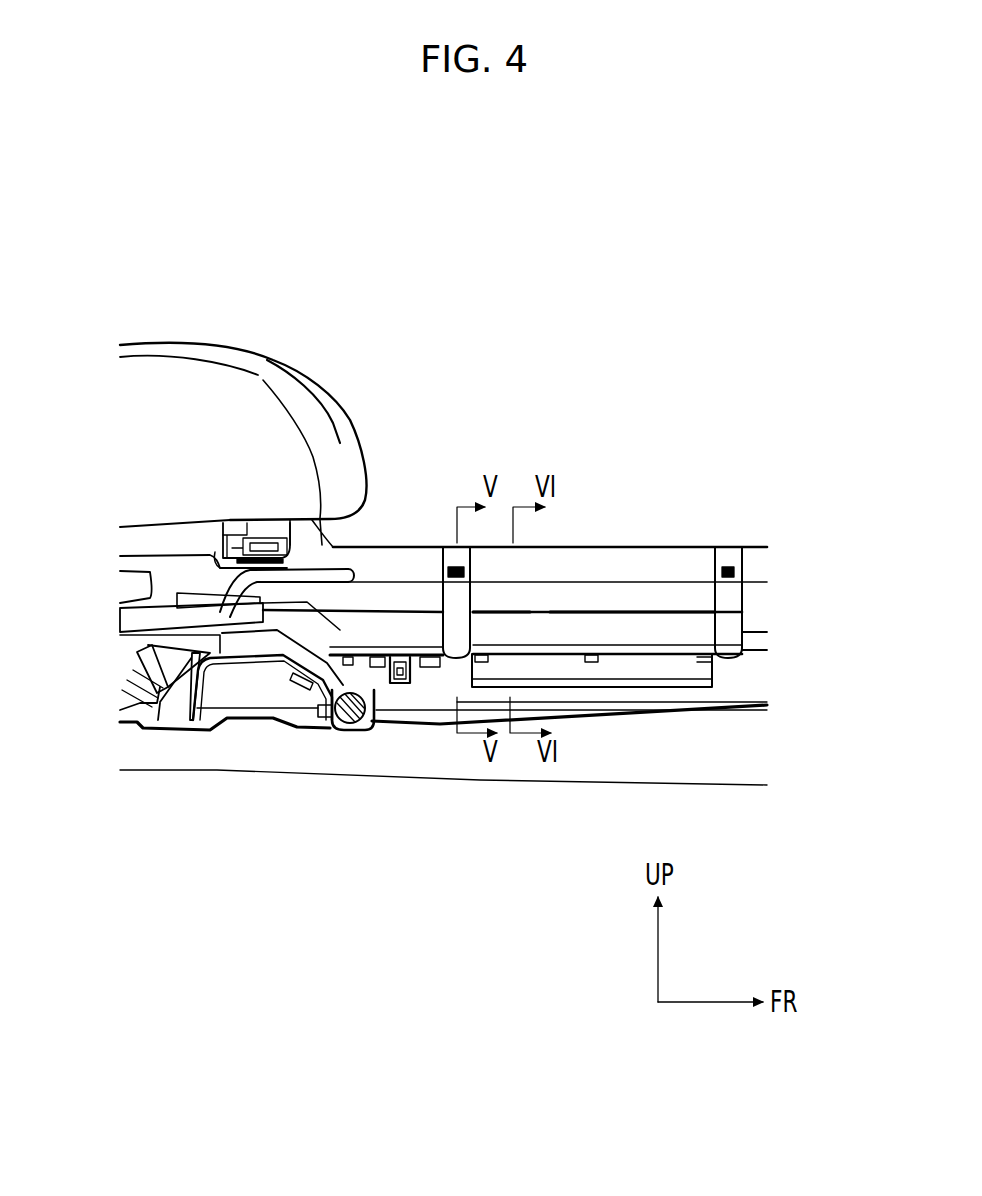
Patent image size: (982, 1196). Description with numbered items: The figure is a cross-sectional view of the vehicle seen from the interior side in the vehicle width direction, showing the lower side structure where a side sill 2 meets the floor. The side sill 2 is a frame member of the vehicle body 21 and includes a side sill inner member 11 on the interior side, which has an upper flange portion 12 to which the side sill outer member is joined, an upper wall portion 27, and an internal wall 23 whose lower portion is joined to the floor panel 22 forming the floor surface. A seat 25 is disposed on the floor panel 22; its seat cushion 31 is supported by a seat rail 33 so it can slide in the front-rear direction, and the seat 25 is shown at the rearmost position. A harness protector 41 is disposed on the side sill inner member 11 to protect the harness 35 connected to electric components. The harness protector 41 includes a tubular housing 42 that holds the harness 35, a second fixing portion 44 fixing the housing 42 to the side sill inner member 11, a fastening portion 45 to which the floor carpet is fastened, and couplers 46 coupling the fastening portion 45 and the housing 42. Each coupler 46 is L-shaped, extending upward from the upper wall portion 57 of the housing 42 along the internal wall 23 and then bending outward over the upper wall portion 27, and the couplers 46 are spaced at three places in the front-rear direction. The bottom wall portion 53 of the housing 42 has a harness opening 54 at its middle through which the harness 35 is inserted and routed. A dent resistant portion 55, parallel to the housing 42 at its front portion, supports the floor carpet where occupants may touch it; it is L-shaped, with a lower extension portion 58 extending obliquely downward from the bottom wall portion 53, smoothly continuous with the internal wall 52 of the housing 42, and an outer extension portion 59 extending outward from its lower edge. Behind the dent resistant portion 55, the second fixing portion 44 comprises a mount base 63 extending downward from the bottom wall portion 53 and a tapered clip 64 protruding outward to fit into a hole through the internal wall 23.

The side sill 2 is at (548, 505).
The side sill inner member 11 is at (548, 505).
The upper flange portion 12 is at (618, 562).
The vehicle body 21 is at (742, 310).
The floor panel 22 is at (147, 732).
The internal wall 23 is at (573, 598).
The seat 25 is at (222, 310).
The upper wall portion 27 is at (413, 563).
The seat cushion 31 is at (295, 364).
The seat rail 33 is at (315, 633).
The harness 35 is at (755, 631).
The harness protector 41 is at (757, 544).
The housing 42 is at (678, 603).
The second fixing portion 44 is at (349, 724).
The fastening portion 45 is at (448, 546).
The coupler 46 is at (460, 597).
The internal wall 52 is at (675, 633).
The bottom wall portion 53 is at (417, 662).
The harness opening 54 is at (338, 727).
The dent resistant portion 55 is at (619, 694).
The upper wall portion 57 is at (587, 608).
The lower extension portion 58 is at (653, 672).
The outer extension portion 59 is at (593, 690).
The mount base 63 is at (382, 684).
The clip 64 is at (400, 688).